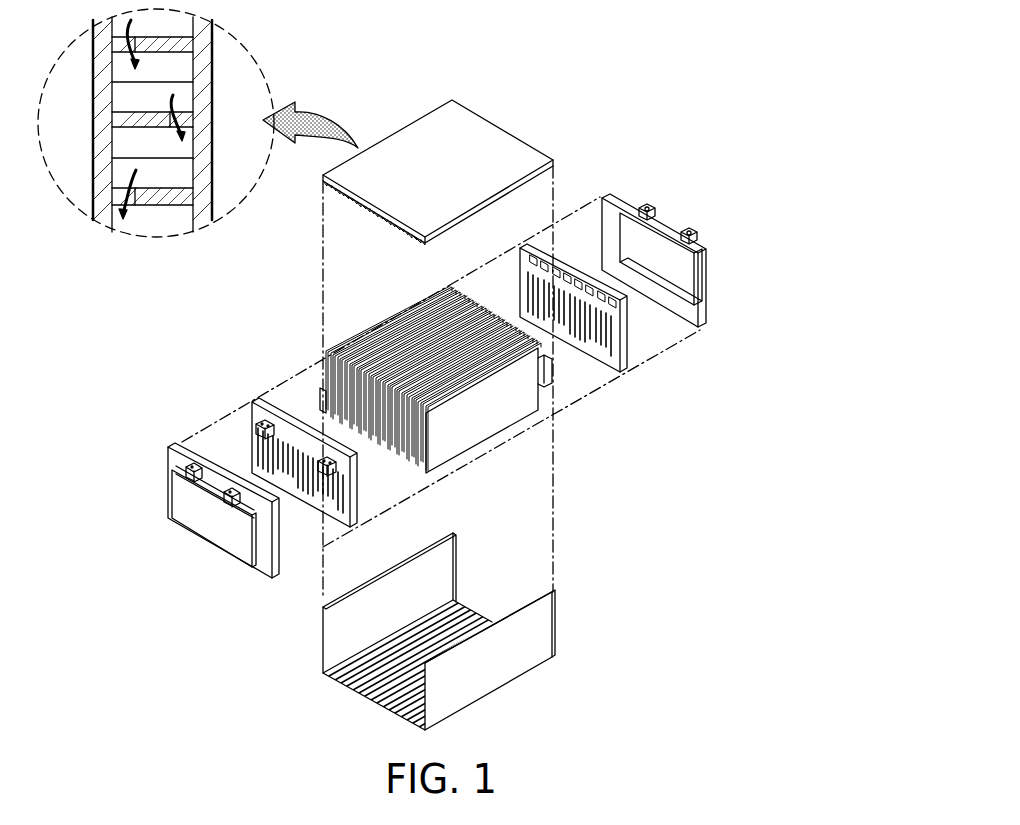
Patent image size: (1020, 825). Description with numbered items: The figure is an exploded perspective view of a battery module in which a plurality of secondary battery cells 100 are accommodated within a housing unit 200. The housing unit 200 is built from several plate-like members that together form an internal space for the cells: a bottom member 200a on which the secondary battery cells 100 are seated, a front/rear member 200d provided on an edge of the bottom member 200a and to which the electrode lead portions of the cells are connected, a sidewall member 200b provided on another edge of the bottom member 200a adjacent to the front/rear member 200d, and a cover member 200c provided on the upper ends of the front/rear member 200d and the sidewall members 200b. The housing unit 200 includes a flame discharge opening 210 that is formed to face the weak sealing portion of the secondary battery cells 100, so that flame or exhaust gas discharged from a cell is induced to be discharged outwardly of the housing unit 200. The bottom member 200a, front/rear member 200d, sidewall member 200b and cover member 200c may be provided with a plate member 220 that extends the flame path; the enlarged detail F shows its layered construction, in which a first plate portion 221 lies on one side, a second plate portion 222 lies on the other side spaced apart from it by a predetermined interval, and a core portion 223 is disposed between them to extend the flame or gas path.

The secondary battery cell 100 is at (386, 312).
The housing unit 200 is at (829, 642).
The bottom member 200a is at (463, 602).
The sidewall member 200b is at (538, 635).
The cover member 200c is at (510, 150).
The front/rear member 200d is at (565, 268).
The flame discharge opening 210 is at (615, 302).
The plate member 220 is at (158, 185).
The first plate portion 221 is at (102, 212).
The second plate portion 222 is at (203, 212).
The core portion 223 is at (167, 200).
The detail view F is at (130, 68).